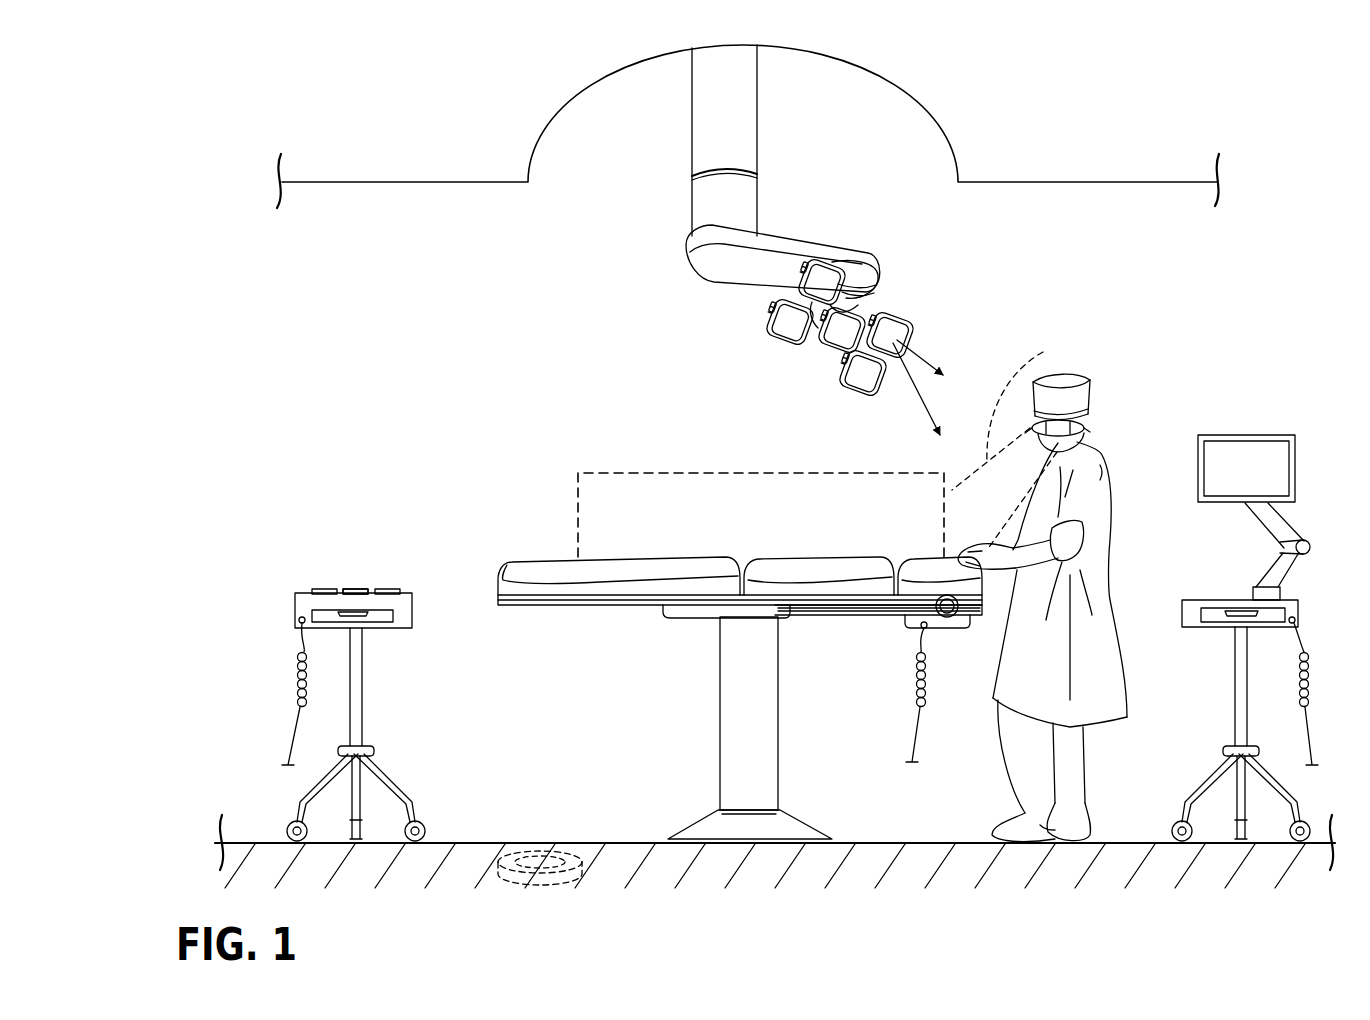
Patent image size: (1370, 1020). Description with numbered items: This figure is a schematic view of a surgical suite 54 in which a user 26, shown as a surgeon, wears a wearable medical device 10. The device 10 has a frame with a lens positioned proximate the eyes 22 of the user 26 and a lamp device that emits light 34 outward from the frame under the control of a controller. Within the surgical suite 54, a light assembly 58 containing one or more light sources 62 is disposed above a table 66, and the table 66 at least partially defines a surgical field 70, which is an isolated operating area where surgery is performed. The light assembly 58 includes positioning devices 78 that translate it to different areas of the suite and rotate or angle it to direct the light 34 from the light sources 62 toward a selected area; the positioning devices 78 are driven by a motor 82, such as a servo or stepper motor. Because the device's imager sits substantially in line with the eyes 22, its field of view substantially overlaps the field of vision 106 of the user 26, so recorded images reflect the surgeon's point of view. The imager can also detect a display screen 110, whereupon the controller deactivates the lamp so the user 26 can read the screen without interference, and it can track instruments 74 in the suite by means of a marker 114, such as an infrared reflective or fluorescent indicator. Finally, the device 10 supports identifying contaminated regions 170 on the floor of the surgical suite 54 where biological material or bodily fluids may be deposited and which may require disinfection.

The wearable medical device 10 is at (1088, 426).
The eyes 22 is at (1075, 410).
The user 26 is at (1112, 483).
The light 34 is at (923, 357).
The surgical suite 54 is at (1190, 283).
The light assembly 58 is at (906, 318).
The light sources 62 is at (788, 327).
The table 66 is at (685, 597).
The surgical field 70 is at (636, 491).
The instruments 74 is at (325, 592).
The positioning devices 78 is at (872, 294).
The motor 82 is at (877, 262).
The field of vision 106 is at (1014, 440).
The display screen 110 is at (1258, 456).
The marker 114 is at (365, 592).
The contaminated regions 170 is at (545, 876).